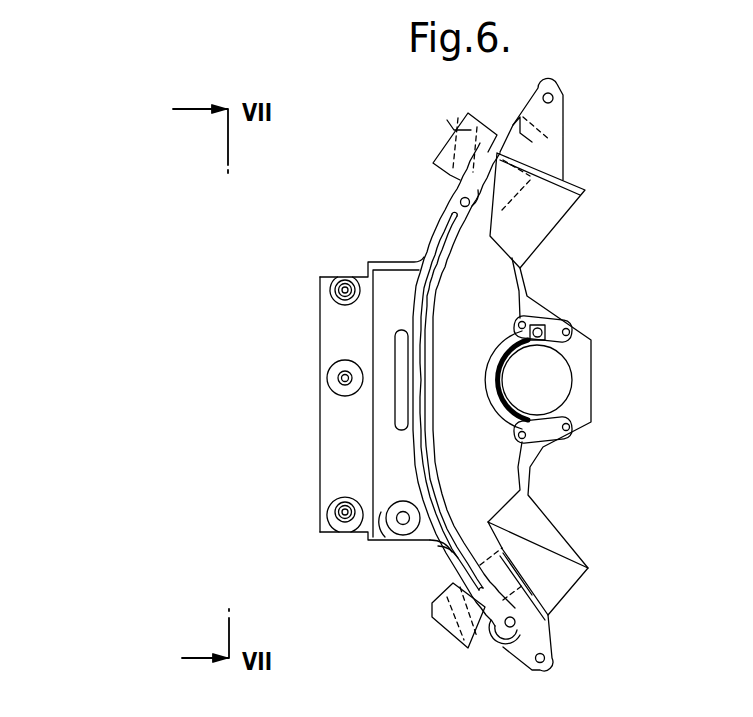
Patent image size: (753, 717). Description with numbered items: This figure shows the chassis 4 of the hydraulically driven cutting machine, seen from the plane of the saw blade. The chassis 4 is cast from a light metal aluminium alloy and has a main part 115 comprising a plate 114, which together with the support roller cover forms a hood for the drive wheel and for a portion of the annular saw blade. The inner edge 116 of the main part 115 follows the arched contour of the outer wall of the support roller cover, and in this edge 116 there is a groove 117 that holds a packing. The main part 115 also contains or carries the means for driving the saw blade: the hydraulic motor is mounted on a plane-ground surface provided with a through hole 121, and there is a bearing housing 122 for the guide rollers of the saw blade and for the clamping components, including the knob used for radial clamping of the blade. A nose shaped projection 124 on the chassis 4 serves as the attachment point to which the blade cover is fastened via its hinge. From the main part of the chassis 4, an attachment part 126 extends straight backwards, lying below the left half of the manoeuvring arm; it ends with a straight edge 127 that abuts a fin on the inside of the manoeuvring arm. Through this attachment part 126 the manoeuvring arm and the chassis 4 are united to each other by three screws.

The chassis 4 is at (428, 233).
The plate 114 is at (468, 391).
The main part 115 is at (528, 283).
The inner edge 116 is at (453, 550).
The groove 117 is at (447, 543).
The through hole 121 is at (543, 382).
The bearing housing 122 is at (453, 142).
The nose shaped projection 124 is at (550, 120).
The attachment part 126 is at (338, 435).
The straight edge 127 is at (320, 338).